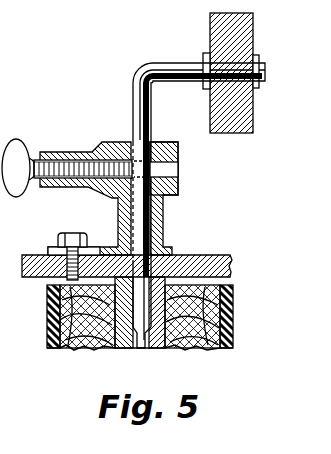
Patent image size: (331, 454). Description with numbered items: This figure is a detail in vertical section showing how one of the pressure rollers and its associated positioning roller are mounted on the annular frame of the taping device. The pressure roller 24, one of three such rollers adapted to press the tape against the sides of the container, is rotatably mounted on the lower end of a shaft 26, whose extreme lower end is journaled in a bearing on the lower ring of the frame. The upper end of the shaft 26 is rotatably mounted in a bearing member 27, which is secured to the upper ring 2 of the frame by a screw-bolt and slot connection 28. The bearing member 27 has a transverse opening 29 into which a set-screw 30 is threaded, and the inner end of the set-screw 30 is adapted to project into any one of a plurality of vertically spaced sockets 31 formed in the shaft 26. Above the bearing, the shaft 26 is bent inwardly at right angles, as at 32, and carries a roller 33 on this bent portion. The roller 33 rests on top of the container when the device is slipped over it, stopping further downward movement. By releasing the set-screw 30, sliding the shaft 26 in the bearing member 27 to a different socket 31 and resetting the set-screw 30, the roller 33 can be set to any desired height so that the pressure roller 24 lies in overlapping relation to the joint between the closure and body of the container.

The upper ring 2 is at (219, 255).
The pressure roller 24 is at (234, 317).
The shaft 26 is at (164, 220).
The bearing member 27 is at (165, 203).
The screw-bolt and slot connection 28 is at (55, 252).
The transverse opening 29 is at (82, 151).
The set-screw 30 is at (20, 143).
The vertical spaced sockets 31 is at (135, 168).
The bent upper end of shaft 32 is at (186, 65).
The roller 33 is at (254, 33).